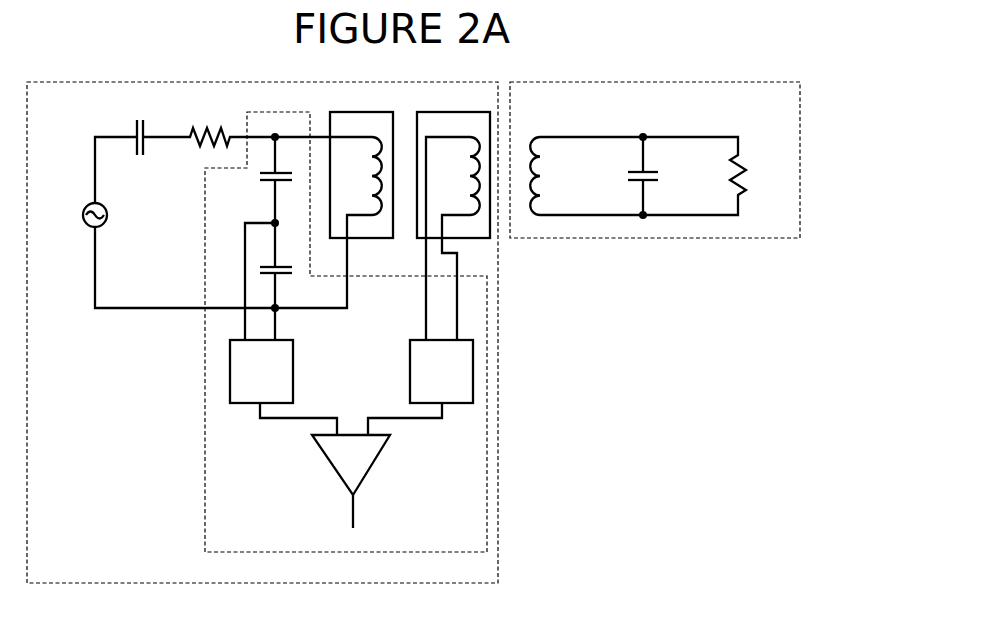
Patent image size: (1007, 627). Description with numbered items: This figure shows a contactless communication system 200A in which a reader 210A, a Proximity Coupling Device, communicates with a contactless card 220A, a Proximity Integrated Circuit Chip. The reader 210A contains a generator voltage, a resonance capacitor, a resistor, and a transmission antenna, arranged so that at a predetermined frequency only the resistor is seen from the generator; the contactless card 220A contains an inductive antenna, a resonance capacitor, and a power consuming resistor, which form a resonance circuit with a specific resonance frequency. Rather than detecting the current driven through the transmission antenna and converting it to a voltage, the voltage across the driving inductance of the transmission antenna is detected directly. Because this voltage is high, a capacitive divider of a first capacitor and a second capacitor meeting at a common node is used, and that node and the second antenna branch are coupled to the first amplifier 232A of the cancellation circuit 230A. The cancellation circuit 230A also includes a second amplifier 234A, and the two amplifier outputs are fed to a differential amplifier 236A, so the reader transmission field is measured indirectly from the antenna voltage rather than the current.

The contactless communication system 200A is at (730, 68).
The reader 210A is at (311, 321).
The contactless card 220A is at (672, 149).
The cancellation circuit 230A is at (375, 332).
The first amplifier 232A is at (246, 393).
The second amplifier 234A is at (460, 393).
The differential amplifier 236A is at (309, 481).